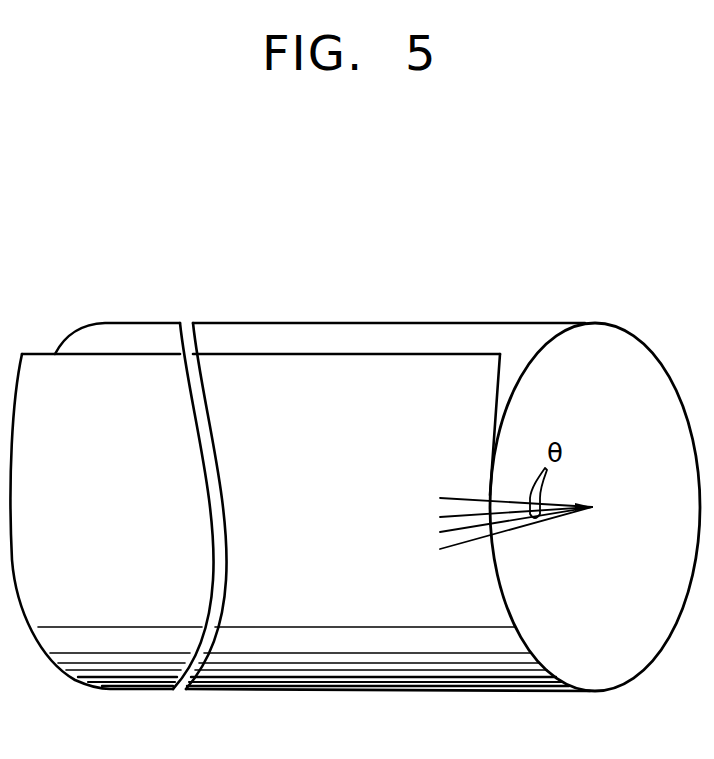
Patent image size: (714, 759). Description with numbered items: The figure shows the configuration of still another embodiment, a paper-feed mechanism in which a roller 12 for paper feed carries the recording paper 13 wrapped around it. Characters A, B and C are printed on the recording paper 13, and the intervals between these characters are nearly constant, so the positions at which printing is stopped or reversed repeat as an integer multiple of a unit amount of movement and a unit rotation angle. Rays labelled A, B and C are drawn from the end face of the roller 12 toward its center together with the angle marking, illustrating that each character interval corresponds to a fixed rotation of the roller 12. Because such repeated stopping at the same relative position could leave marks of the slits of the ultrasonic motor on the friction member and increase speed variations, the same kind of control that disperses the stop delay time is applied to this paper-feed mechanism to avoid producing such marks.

The roller 12 is at (611, 353).
The recording paper 13 is at (418, 373).
The character A is at (506, 506).
The character B is at (506, 524).
The character C is at (506, 534).